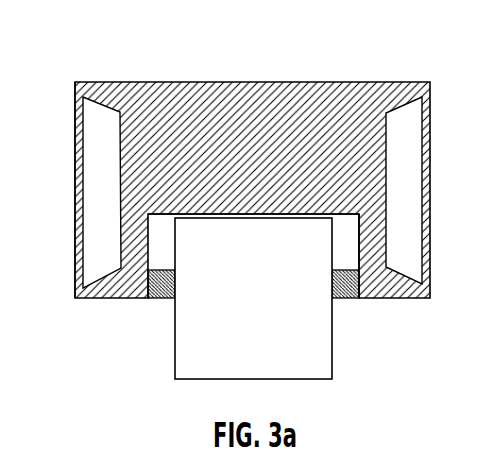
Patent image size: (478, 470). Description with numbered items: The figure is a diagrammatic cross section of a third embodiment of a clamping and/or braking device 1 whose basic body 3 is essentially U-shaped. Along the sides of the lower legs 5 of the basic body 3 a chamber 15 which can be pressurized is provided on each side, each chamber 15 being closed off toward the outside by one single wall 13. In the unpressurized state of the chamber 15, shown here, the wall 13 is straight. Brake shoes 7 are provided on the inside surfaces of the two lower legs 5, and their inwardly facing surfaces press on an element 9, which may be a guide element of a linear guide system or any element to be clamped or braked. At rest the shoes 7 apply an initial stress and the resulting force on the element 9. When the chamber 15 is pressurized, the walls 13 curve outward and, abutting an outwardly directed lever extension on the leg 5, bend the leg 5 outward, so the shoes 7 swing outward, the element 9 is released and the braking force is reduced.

The clamping and/or braking device 1 is at (179, 42).
The basic body 3 is at (285, 82).
The lower legs 5 is at (375, 226).
The brake shoes 7 is at (350, 298).
The element 9 is at (261, 298).
The wall 13 is at (76, 121).
The chamber 15 is at (113, 198).